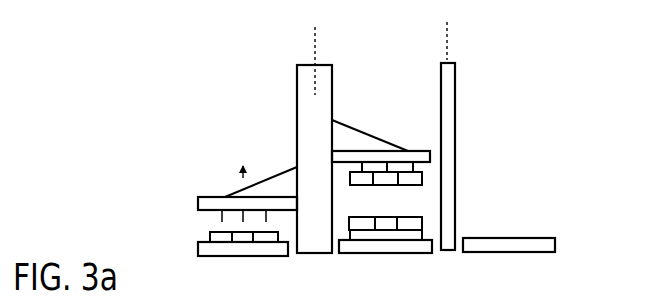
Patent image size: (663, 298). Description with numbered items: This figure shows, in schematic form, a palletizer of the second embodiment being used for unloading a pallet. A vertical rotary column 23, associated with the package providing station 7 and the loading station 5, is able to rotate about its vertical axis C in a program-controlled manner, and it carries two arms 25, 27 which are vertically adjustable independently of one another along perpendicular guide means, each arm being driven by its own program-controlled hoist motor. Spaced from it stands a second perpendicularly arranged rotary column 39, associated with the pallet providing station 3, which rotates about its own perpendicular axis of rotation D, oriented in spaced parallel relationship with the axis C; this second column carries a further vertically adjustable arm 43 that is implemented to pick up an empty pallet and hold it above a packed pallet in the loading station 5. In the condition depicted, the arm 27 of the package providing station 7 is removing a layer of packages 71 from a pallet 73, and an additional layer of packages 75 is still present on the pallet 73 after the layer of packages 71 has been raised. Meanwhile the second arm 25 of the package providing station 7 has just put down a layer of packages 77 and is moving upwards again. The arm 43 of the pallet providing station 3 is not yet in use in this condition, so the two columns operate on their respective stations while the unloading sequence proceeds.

The pallet providing station 3 is at (497, 255).
The loading station 5 is at (383, 257).
The package providing station 7 is at (235, 258).
The vertical rotary column 23 is at (297, 79).
The arm 25 is at (207, 197).
The arm 27 is at (425, 150).
The second rotary column 39 is at (456, 70).
The arm 43 is at (505, 237).
The layer of packages 71 is at (423, 181).
The pallet 73 is at (426, 226).
The additional layer of packages 75 is at (422, 220).
The layer of packages 77 is at (210, 237).
The vertical axis C is at (317, 38).
The perpendicular axis of rotation D is at (450, 30).